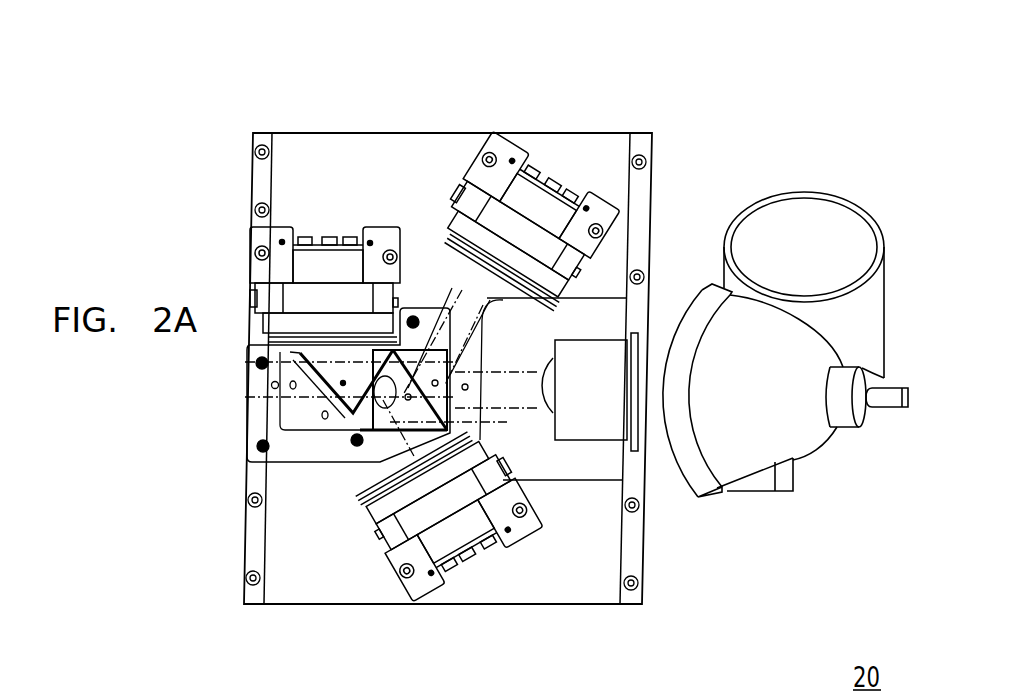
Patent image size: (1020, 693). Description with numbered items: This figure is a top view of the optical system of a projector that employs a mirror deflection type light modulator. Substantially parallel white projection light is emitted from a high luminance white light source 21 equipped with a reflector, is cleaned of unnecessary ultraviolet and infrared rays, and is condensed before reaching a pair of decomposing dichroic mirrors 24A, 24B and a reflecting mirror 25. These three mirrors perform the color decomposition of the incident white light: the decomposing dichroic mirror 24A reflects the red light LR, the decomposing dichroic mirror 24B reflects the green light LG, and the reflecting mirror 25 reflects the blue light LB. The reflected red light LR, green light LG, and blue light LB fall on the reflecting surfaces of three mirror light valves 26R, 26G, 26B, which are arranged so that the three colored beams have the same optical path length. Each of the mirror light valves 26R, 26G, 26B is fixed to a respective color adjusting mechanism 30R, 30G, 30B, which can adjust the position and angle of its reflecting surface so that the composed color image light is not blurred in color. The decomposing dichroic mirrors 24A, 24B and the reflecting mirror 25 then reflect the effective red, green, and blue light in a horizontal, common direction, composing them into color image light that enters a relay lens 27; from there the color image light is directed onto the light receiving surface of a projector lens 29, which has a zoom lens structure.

The high luminance white light source 21 is at (713, 350).
The decomposing dichroic mirror 24A is at (362, 435).
The decomposing dichroic mirror 24B is at (360, 428).
The reflecting mirror 25 is at (249, 400).
The mirror light valve 26B is at (310, 307).
The mirror light valve 26R is at (545, 213).
The mirror light valve 26G is at (467, 555).
The relay lens 27 is at (602, 418).
The projector lens 29 is at (753, 233).
The color adjusting mechanism 30B is at (333, 267).
The color adjusting mechanism 30R is at (503, 233).
The color adjusting mechanism 30G is at (487, 537).
The blue light LB is at (250, 373).
The red light LR is at (473, 305).
The green light LG is at (366, 478).